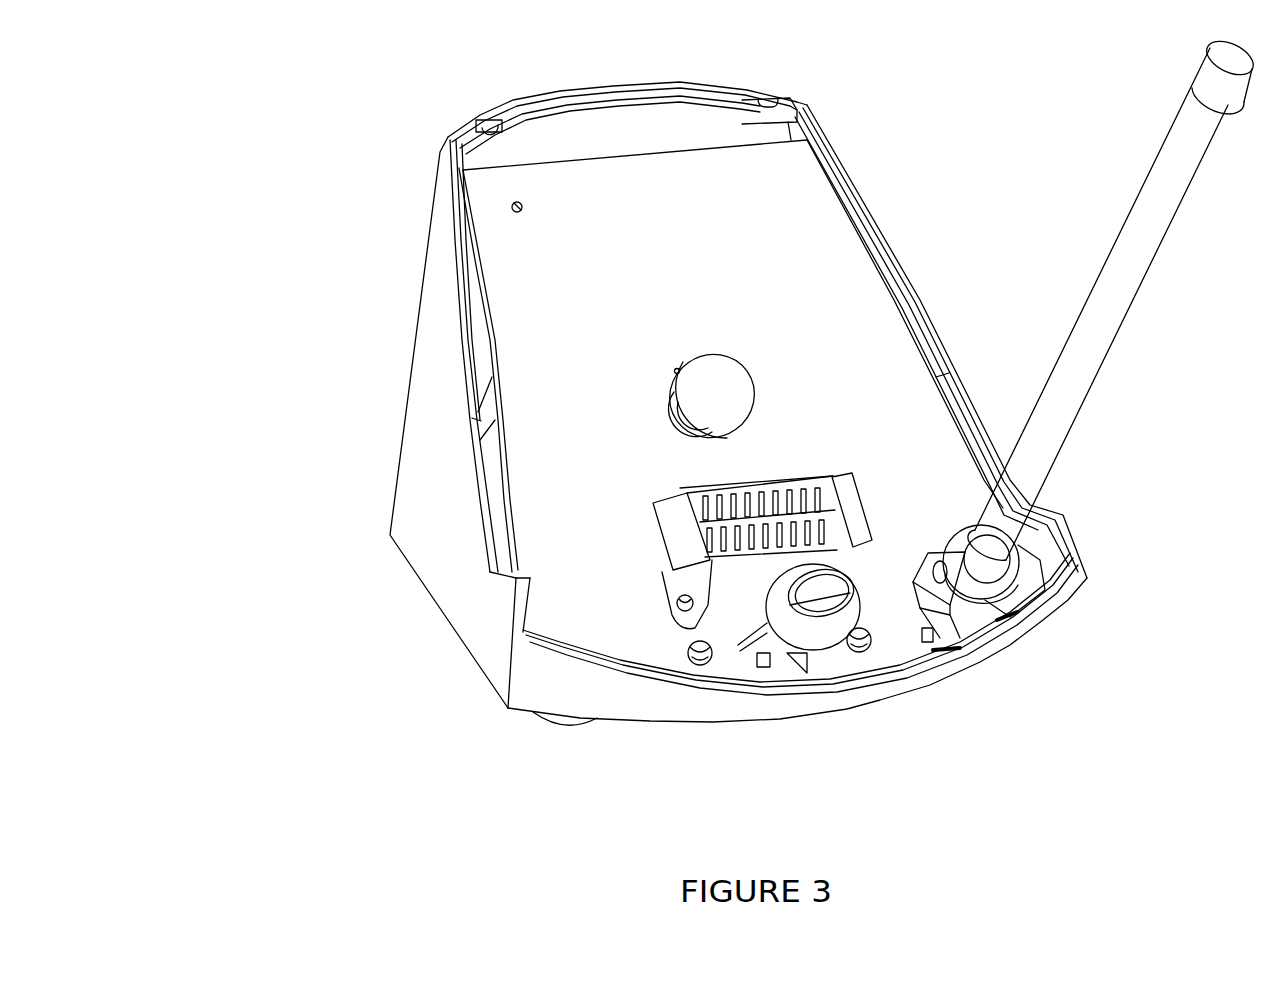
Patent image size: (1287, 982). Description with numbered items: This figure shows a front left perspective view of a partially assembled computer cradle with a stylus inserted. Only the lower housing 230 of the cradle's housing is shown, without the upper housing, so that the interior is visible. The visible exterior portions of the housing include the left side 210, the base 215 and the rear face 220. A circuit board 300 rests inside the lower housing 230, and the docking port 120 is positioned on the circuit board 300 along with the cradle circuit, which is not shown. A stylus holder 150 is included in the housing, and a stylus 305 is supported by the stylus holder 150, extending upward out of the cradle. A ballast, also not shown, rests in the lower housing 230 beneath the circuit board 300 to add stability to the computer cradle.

The docking port 120 is at (786, 487).
The stylus holder 150 is at (1003, 578).
The left side 210 is at (443, 462).
The base 215 is at (797, 673).
The rear face 220 is at (573, 120).
The lower housing 230 is at (342, 424).
The circuit board 300 is at (733, 402).
The stylus 305 is at (1109, 310).